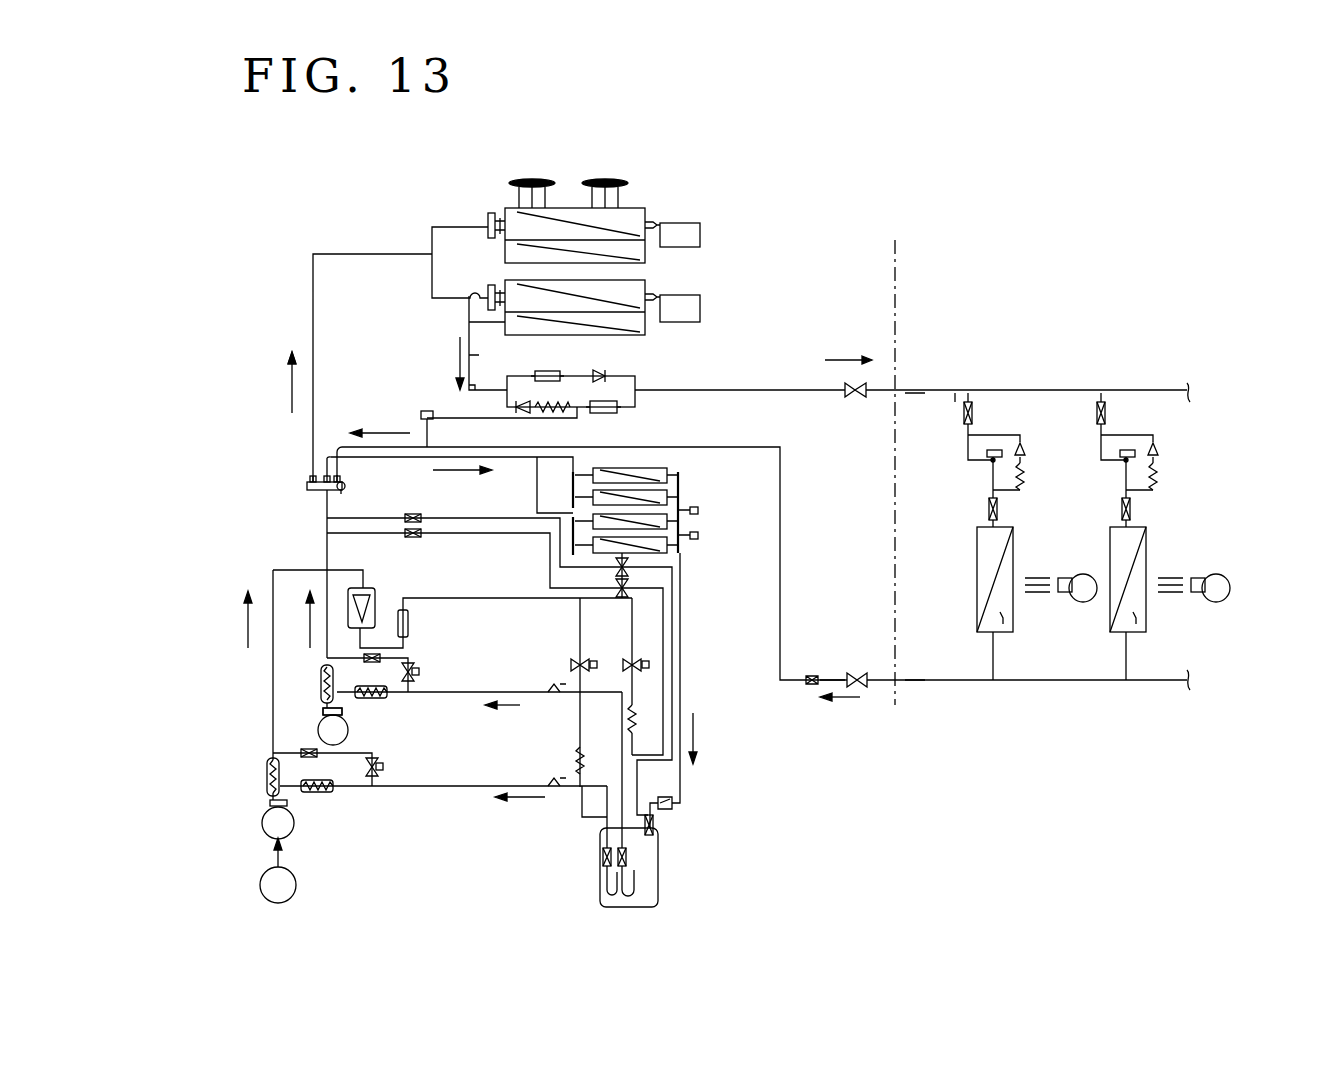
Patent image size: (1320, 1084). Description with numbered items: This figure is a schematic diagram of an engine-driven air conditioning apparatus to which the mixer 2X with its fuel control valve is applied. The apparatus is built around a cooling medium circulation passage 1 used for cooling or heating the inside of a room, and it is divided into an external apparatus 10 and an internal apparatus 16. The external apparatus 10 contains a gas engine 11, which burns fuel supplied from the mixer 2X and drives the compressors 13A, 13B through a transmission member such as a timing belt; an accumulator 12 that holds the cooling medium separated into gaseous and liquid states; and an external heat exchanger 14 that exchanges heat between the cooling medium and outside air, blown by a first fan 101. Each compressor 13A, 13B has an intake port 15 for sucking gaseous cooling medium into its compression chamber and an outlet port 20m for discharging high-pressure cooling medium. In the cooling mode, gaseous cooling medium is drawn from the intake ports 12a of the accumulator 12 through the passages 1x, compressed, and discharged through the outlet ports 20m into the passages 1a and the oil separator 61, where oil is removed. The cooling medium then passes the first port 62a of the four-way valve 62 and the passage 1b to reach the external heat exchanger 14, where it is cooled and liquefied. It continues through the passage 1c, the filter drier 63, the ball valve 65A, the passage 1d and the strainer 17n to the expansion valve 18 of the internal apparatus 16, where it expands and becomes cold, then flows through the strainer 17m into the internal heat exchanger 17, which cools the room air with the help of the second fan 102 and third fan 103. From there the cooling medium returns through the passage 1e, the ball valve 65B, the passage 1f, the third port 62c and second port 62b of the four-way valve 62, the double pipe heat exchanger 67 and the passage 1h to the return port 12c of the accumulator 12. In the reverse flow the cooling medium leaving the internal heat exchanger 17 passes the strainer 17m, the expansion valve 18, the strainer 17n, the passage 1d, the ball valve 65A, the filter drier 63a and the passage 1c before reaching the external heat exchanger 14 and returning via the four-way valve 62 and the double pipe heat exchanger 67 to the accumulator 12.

The cooling medium circulation passage 1 is at (742, 388).
The passage 1a is at (328, 650).
The passage 1b is at (313, 318).
The passage 1c is at (469, 330).
The passage 1d is at (940, 393).
The passage 1e is at (938, 682).
The passage 1f is at (718, 447).
The passage 1h is at (681, 668).
The passage 1x is at (557, 694).
The mixer 2X is at (292, 898).
The external apparatus 10 is at (799, 472).
The gas engine 11 is at (297, 884).
The accumulator 12 is at (660, 895).
The intake port 12a is at (614, 852).
The return port 12c is at (655, 826).
The compressor 13A is at (294, 828).
The compressor 13B is at (350, 730).
The external heat exchanger 14 is at (645, 209).
The intake port 15 is at (340, 712).
The internal apparatus 16 is at (1001, 465).
The internal heat exchanger 17 is at (1013, 632).
The strainer 17m is at (988, 509).
The strainer 17n is at (978, 414).
The expansion valve 18 is at (1024, 458).
The outlet port 20m is at (320, 712).
The oil separator 61 is at (377, 597).
The four-way valve 62 is at (308, 490).
The first port 62a is at (312, 479).
The second port 62b is at (343, 490).
The third port 62c is at (347, 476).
The filter drier 63 is at (560, 373).
The filter drier 63a is at (617, 412).
The ball valve 65A is at (855, 398).
The ball valve 65B is at (860, 670).
The double pipe heat exchanger 67 is at (660, 469).
The first fan 101 is at (532, 178).
The second fan 102 is at (1085, 574).
The third fan 103 is at (1218, 574).